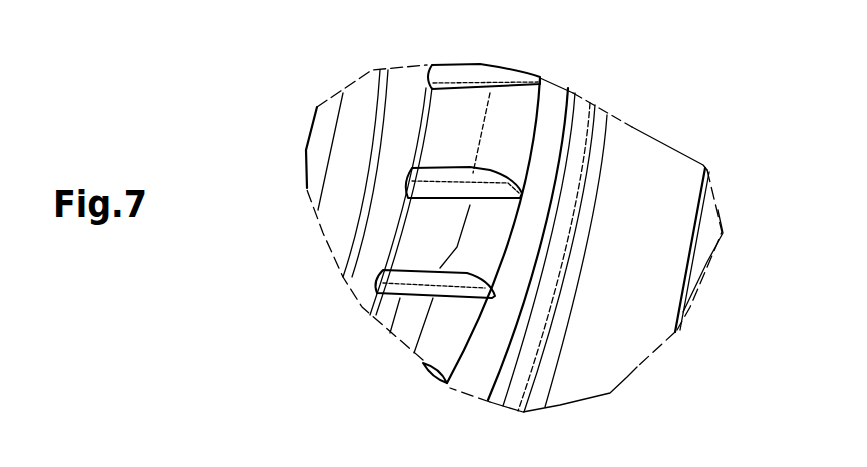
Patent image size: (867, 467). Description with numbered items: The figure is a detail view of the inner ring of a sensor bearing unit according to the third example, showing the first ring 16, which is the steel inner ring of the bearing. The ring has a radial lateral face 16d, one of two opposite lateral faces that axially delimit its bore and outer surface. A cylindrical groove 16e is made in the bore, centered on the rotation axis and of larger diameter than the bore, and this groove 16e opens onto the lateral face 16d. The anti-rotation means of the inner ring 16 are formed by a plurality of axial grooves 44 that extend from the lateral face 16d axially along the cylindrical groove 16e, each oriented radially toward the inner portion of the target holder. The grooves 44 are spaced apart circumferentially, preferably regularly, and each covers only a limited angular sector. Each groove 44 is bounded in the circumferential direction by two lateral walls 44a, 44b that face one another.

The first ring 16 is at (362, 270).
The radial lateral face 16d is at (478, 376).
The cylindrical groove 16e is at (451, 108).
The axial groove 44 is at (493, 174).
The lateral wall 44a is at (433, 278).
The lateral wall 44b is at (418, 294).